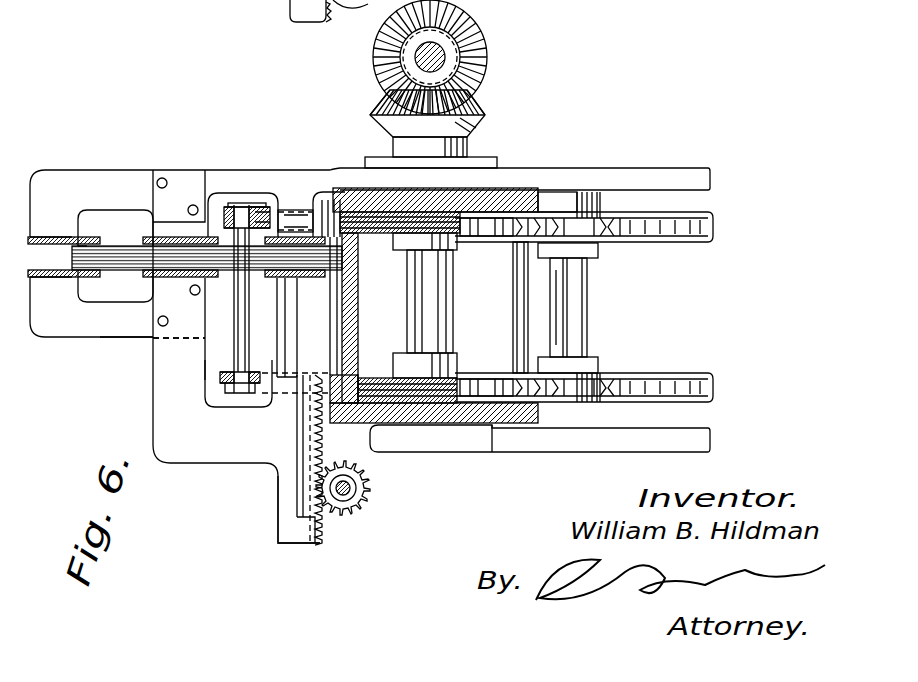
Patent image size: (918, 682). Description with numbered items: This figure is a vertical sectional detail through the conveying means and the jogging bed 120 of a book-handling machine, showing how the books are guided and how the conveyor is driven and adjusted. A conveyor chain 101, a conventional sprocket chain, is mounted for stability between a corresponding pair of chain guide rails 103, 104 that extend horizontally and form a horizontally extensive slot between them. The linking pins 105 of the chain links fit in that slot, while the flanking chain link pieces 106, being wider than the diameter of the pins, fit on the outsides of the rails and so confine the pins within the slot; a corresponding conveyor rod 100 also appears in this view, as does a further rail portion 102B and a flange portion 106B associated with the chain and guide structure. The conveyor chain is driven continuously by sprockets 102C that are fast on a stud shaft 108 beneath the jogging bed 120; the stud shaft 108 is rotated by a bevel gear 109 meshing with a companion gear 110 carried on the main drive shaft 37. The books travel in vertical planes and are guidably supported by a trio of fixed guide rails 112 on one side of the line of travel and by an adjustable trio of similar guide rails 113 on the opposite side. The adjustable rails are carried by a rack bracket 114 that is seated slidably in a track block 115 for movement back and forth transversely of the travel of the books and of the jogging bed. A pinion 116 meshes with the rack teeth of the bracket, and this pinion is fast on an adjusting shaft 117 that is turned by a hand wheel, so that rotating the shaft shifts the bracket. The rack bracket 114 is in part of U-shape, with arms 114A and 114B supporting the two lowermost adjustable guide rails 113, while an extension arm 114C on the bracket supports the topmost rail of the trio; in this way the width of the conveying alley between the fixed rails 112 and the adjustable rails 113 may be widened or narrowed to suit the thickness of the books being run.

The main drive shaft 37 is at (440, 52).
The conveyor rod 100 is at (236, 302).
The conveyor chain 101 is at (470, 230).
The guide rail 102B is at (607, 372).
The sprocket 102C is at (392, 226).
The chain guide rail 103 is at (200, 212).
The chain guide rail 104 is at (280, 212).
The linking pin 105 is at (226, 208).
The flanking chain link piece 106 is at (243, 207).
The sleeve flange 106B is at (263, 203).
The stud shaft 108 is at (430, 303).
The bevel gear 109 is at (387, 124).
The companion gear 110 is at (384, 57).
The fixed guide rail 112 is at (58, 236).
The adjustable guide rail 113 is at (58, 279).
The rack bracket 114 is at (142, 235).
The arm 114A is at (177, 328).
The arm 114B is at (286, 296).
The extension arm 114C is at (96, 330).
The track block 115 is at (306, 478).
The pinion 116 is at (358, 509).
The adjusting shaft 117 is at (343, 495).
The jogging bed 120 is at (349, 308).